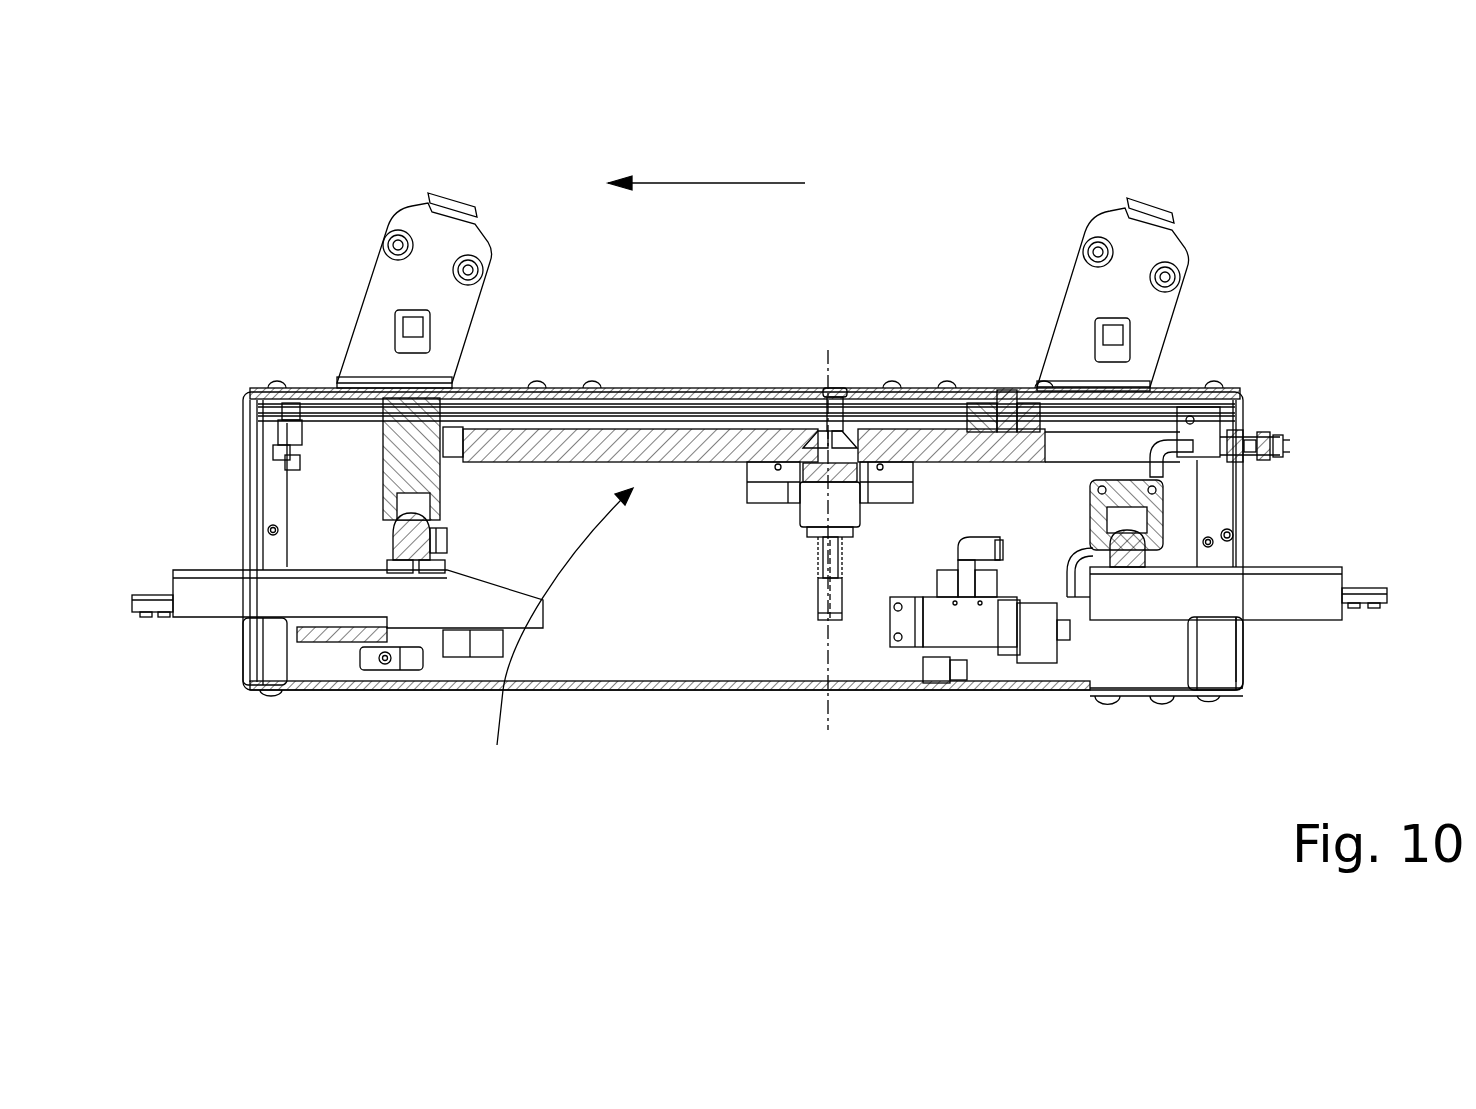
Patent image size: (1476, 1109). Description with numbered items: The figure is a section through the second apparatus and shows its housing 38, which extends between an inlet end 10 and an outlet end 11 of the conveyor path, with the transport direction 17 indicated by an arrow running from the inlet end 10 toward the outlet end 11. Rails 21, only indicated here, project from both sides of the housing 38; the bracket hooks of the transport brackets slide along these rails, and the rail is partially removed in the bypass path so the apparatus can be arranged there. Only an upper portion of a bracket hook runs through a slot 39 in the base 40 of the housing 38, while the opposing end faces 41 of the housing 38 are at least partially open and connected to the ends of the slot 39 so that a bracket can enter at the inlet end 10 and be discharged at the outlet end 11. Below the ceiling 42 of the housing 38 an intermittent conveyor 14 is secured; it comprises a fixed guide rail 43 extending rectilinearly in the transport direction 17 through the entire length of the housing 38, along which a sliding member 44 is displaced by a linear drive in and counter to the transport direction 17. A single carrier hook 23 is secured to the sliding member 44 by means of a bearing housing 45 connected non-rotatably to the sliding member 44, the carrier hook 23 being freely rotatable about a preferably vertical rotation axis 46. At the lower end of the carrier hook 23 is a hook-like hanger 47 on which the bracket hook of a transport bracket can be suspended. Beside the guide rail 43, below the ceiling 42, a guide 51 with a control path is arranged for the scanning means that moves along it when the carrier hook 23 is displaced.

The inlet end 10 is at (1298, 580).
The outlet end 11 is at (220, 585).
The conveyor 14 is at (556, 632).
The transport direction 17 is at (733, 183).
The rail 21 is at (150, 600).
The carrier hook 23 is at (804, 580).
The housing 38 is at (450, 726).
The slot 39 is at (214, 648).
The base 40 is at (1135, 697).
The end faces 41 is at (240, 434).
The ceiling 42 is at (1187, 397).
The guide rail 43 is at (325, 437).
The sliding member 44 is at (753, 470).
The bearing housing 45 is at (810, 507).
The rotation axis 46 is at (826, 358).
The hanger 47 is at (838, 602).
The guide 51 is at (665, 432).